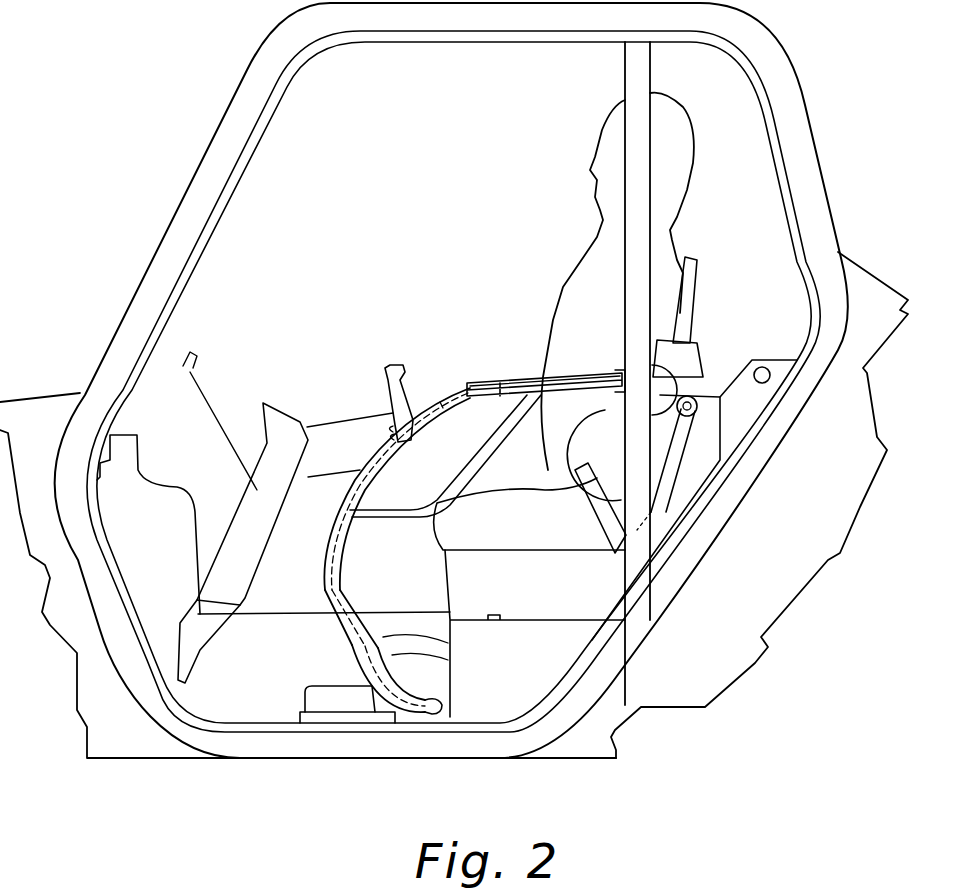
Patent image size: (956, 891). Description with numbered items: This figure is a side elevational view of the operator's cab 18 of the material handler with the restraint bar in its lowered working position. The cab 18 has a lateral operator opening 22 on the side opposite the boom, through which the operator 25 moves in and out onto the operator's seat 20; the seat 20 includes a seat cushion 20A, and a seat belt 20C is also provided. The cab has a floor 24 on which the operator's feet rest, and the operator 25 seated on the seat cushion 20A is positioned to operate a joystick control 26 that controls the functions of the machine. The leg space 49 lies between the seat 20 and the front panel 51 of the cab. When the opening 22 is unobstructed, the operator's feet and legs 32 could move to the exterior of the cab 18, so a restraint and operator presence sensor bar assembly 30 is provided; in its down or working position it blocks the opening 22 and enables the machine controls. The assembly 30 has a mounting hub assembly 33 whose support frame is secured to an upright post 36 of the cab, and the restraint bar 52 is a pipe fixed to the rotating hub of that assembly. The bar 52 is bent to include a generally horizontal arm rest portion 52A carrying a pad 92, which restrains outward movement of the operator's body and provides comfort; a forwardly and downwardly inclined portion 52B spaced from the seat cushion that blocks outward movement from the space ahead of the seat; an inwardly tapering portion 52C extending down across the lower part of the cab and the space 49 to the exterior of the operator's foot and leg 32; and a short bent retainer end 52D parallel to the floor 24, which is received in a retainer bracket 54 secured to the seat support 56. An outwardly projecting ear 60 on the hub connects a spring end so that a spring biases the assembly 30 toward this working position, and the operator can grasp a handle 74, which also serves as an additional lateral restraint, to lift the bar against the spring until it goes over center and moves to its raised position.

The operator's cab 18 is at (168, 238).
The operator opening 22 is at (330, 97).
The upright post 36 is at (645, 70).
The operator 25 is at (672, 228).
The mounting hub assembly 33 is at (630, 373).
The pad 92 is at (565, 383).
The outwardly projecting ear 60 is at (693, 393).
The restraint bar 52 is at (530, 380).
The horizontal pipe arm rest portion 52A is at (492, 383).
The forwardly and downwardly inclined portion 52B is at (374, 458).
The inwardly tapering portion 52C is at (333, 588).
The short bent retainer end 52D is at (423, 693).
The retainer bracket 54 is at (442, 705).
The handle 74 is at (452, 503).
The restraint and operator presence sensor bar assembly 30 is at (441, 407).
The joystick control 26 is at (392, 365).
The front panel 51 is at (252, 487).
The leg space 49 is at (306, 546).
The operator's seat 20 is at (541, 481).
The seat belt 20C is at (587, 510).
The seat cushion 20A is at (570, 540).
The operator's feet and legs 32 is at (323, 687).
The floor 24 is at (303, 713).
The seat support 56 is at (553, 670).